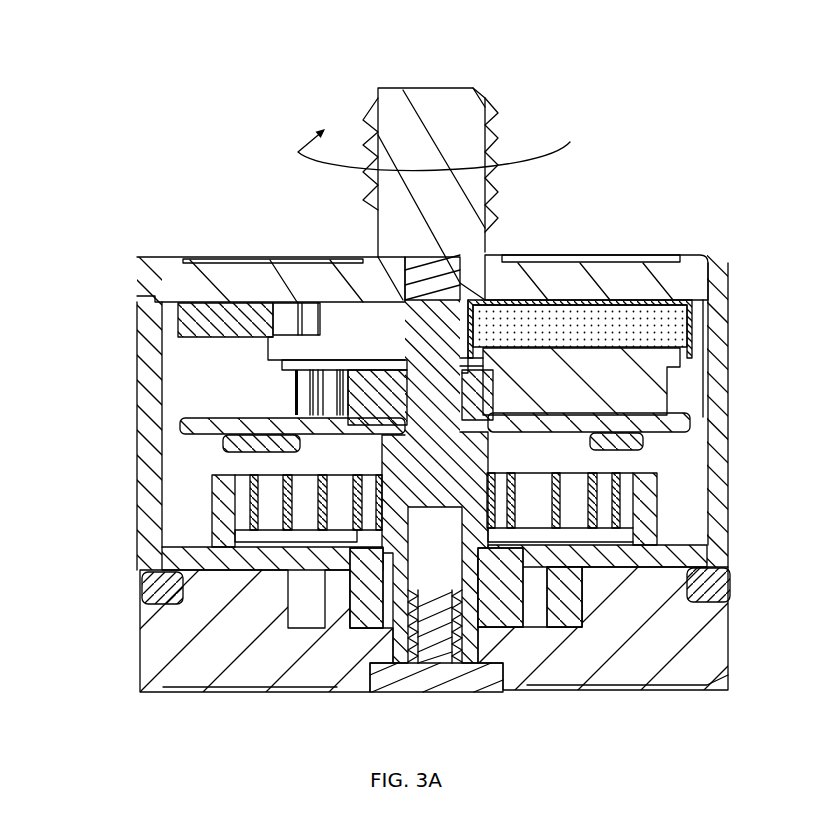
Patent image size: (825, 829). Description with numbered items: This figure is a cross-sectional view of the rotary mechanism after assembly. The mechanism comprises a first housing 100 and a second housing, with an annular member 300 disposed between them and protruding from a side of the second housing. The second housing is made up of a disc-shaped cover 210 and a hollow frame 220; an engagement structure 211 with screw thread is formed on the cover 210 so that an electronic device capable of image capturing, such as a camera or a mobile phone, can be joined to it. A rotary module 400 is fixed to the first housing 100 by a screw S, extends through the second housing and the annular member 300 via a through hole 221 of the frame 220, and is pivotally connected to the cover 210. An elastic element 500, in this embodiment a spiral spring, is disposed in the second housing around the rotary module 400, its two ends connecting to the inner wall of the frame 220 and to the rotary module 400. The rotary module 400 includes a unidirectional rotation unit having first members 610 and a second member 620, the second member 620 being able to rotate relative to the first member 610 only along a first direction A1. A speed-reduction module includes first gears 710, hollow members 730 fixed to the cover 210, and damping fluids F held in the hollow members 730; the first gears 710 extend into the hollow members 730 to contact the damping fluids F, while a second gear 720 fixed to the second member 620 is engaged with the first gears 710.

The first housing 100 is at (150, 653).
The cover 210 is at (250, 273).
The engagement structure 211 is at (397, 195).
The hollow frame 220 is at (147, 362).
The through hole 221 is at (390, 600).
The annular member 300 is at (148, 588).
The rotary module 400 is at (473, 647).
The elastic element 500 is at (258, 507).
The first member 610 is at (222, 443).
The second member 620 is at (200, 423).
The first gear 710 is at (297, 393).
The second gear 720 is at (497, 378).
The hollow member 730 is at (688, 335).
The first direction A1 is at (570, 142).
The damping fluid F is at (670, 313).
The screw S is at (403, 683).